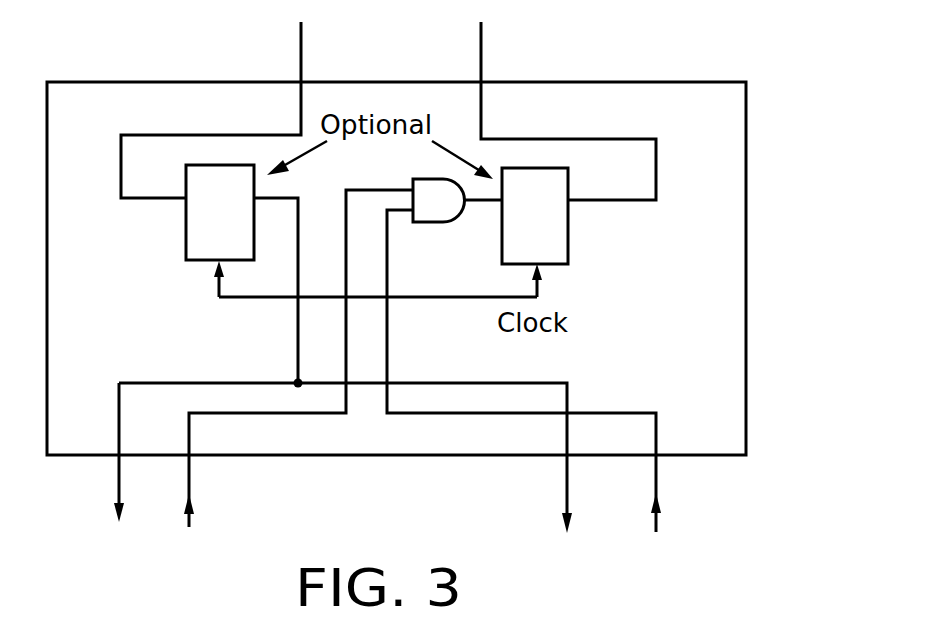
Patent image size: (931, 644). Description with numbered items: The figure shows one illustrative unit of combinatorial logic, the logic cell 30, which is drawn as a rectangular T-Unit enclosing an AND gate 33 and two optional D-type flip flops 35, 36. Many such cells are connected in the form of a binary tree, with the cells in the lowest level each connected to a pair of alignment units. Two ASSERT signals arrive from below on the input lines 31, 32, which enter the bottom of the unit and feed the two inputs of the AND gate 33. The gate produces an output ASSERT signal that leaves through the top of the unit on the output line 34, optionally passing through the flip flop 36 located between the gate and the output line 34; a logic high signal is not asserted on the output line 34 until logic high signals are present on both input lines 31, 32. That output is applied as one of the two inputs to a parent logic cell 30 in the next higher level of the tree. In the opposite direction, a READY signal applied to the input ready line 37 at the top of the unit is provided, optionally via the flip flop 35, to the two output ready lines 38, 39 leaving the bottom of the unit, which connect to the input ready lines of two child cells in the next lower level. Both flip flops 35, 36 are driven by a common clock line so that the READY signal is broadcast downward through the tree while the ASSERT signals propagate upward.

The logic cell 30 is at (746, 307).
The input line 31 is at (190, 480).
The input line 32 is at (658, 480).
The AND gate 33 is at (438, 223).
The output line 34 is at (483, 66).
The D-type flip flop 35 is at (186, 243).
The D-type flip flop 36 is at (568, 247).
The input ready line 37 is at (302, 66).
The output ready line 38 is at (114, 474).
The output ready line 39 is at (563, 478).